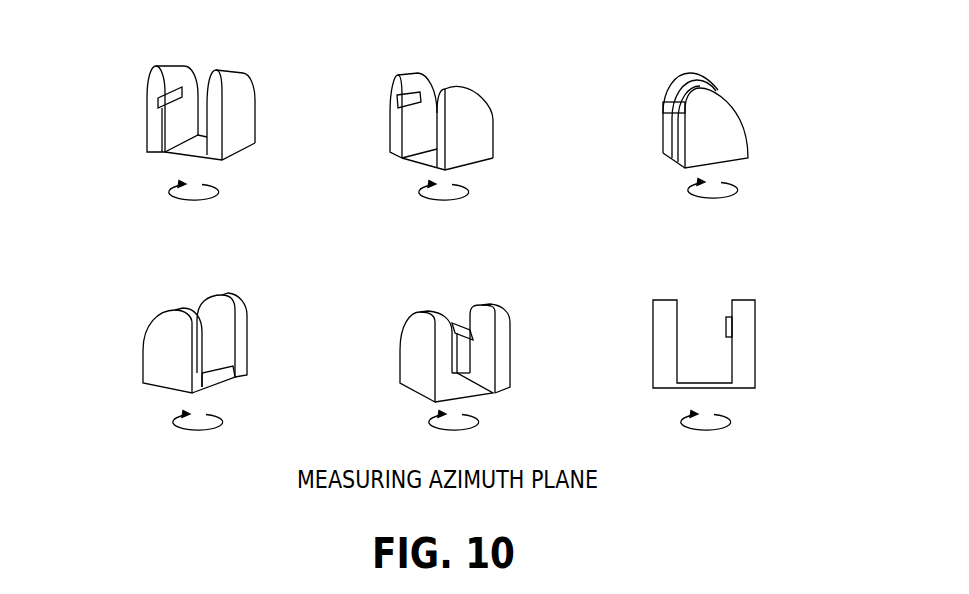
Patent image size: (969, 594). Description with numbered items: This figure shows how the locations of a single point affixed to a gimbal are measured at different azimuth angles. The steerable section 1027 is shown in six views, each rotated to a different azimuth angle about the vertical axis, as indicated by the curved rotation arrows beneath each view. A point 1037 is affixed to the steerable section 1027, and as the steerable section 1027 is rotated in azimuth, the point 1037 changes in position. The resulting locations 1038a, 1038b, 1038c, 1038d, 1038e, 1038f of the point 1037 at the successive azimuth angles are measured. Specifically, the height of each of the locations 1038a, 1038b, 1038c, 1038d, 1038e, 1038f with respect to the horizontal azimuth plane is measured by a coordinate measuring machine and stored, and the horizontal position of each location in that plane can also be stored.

The steerable section 1027 is at (147, 135).
The point 1037 is at (158, 99).
The location 1038a is at (149, 99).
The location 1038b is at (398, 84).
The location 1038c is at (662, 87).
The location 1038d is at (188, 300).
The location 1038e is at (455, 307).
The location 1038f is at (726, 304).